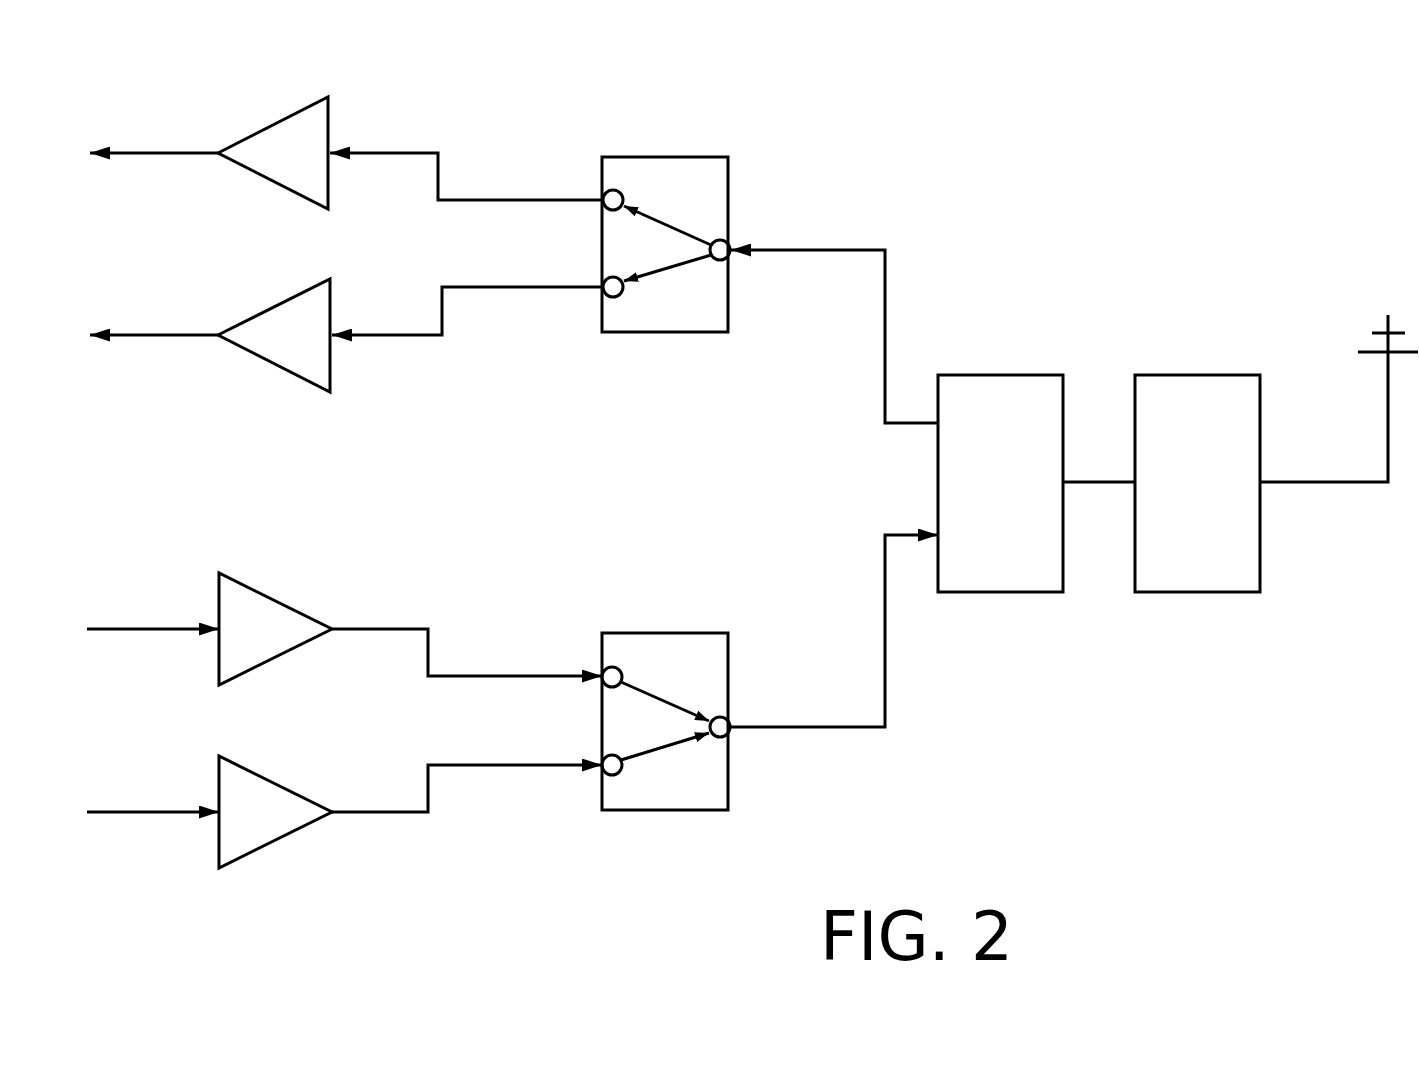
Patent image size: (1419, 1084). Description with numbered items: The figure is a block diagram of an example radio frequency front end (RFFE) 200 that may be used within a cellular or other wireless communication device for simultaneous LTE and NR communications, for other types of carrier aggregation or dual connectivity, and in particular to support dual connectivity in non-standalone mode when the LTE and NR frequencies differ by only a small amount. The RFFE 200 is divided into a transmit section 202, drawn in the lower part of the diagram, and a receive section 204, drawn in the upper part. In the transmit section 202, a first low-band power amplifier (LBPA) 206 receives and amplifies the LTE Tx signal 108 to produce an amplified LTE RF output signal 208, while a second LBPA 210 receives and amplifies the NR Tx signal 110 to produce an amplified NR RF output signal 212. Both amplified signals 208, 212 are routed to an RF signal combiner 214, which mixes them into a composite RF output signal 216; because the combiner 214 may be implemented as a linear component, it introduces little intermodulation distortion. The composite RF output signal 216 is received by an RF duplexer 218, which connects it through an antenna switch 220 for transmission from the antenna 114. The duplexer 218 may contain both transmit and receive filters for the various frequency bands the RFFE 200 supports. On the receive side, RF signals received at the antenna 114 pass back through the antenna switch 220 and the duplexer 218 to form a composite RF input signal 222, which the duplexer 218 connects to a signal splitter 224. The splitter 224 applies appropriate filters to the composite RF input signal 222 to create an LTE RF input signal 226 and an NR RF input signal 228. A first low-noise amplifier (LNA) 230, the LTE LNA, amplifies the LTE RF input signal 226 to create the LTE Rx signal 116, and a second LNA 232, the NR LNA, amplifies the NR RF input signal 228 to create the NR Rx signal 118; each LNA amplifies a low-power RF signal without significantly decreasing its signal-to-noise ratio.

The radio frequency front end (RFFE) 200 is at (1306, 71).
The transmit section 202 is at (934, 826).
The receive section 204 is at (931, 136).
The LTE Tx signal 108 is at (128, 627).
The NR Tx signal 110 is at (135, 810).
The antenna 114 is at (1372, 333).
The LTE Rx signal 116 is at (148, 151).
The NR Rx signal 118 is at (148, 333).
The first low-band power amplifier (LBPA) 206 is at (265, 603).
The amplified LTE RF output signal 208 is at (375, 627).
The second low-band power amplifier (LBPA) 210 is at (265, 785).
The amplified NR RF output signal 212 is at (378, 810).
The RF signal combiner 214 is at (693, 642).
The composite RF output signal 216 is at (808, 725).
The RF duplexer 218 is at (1045, 380).
The antenna switch 220 is at (1233, 380).
The composite RF input signal 222 is at (808, 248).
The signal splitter 224 is at (715, 165).
The LTE RF input signal 226 is at (363, 153).
The NR RF input signal 228 is at (385, 335).
The first low-noise amplifier (LNA) 230 is at (288, 128).
The second low-noise amplifier (LNA) 232 is at (288, 310).